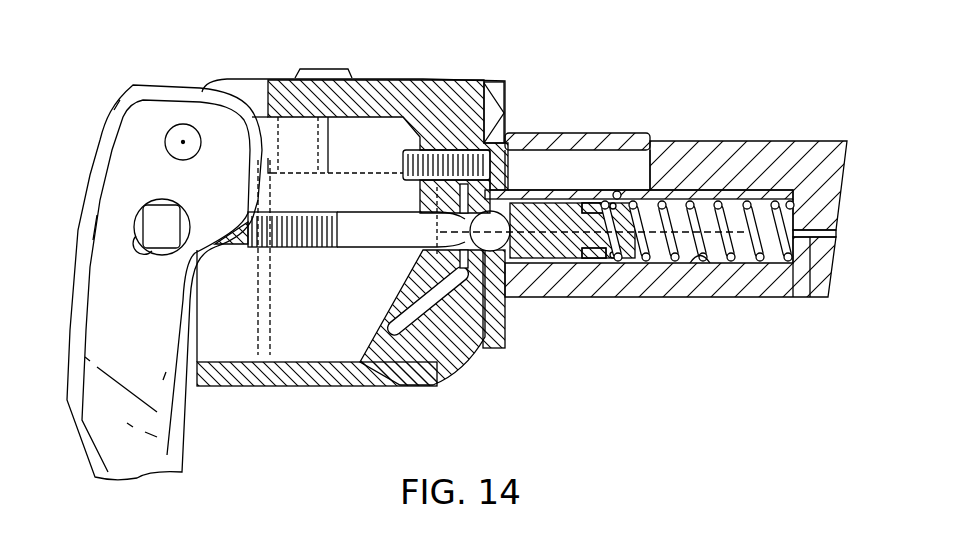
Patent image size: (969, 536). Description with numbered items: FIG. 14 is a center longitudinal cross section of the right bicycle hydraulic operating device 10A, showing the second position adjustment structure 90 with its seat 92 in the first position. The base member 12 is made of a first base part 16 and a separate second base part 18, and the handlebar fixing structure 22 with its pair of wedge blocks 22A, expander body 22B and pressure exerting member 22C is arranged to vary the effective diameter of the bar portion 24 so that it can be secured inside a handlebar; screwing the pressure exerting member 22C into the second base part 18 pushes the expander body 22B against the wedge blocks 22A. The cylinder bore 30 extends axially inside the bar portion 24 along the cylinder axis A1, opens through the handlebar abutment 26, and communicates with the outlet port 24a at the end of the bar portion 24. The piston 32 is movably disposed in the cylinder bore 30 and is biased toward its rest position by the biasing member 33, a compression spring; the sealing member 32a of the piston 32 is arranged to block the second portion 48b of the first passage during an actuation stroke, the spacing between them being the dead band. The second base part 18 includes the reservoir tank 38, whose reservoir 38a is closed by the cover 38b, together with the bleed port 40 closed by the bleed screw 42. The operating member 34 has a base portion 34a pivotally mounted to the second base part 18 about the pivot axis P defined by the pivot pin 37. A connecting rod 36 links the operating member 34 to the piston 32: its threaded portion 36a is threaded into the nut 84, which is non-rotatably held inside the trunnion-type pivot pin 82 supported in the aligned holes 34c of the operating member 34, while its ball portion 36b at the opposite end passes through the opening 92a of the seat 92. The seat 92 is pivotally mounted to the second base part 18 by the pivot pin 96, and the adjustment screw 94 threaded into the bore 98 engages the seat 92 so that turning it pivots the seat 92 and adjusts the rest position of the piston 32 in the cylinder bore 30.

The bicycle hydraulic operating device 10A is at (104, 75).
The base member 12 is at (505, 54).
The first base part 16 is at (713, 139).
The second base part 18 is at (414, 77).
The handlebar fixing structure 22 is at (523, 113).
The wedge blocks 22A is at (602, 133).
The expander body 22B is at (512, 166).
The pressure exerting member 22C is at (403, 160).
The bar portion 24 is at (641, 297).
The outlet port 24a is at (812, 238).
The handlebar abutment 26 is at (505, 346).
The cylinder bore 30 is at (730, 261).
The piston 32 is at (557, 258).
The sealing member 32a is at (601, 260).
The biasing member 33 is at (750, 197).
The operating member 34 is at (181, 450).
The base portion 34a is at (108, 122).
The aligned holes 34c is at (152, 252).
The connecting rod 36 is at (353, 250).
The threaded portion 36a is at (232, 249).
The ball portion 36b is at (430, 255).
The pivot pin 37 is at (190, 153).
The reservoir tank 38 is at (285, 163).
The reservoir 38a is at (320, 386).
The cover 38b is at (256, 386).
The bleed port 40 is at (335, 132).
The bleed screw 42 is at (317, 68).
The second portion 48b is at (619, 191).
The pivot pin 82 is at (136, 213).
The nut 84 is at (160, 222).
The second position adjustment structure 90 is at (405, 385).
The seat 92 is at (495, 268).
The opening 92a is at (472, 238).
The adjustment screw 94 is at (357, 372).
The pivot pin 96 is at (445, 207).
The bore 98 is at (372, 332).
The cylinder axis A1 is at (683, 235).
The pivot axis P is at (182, 139).